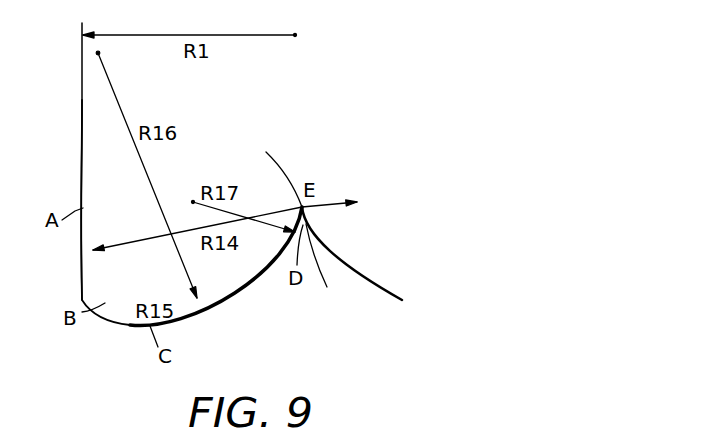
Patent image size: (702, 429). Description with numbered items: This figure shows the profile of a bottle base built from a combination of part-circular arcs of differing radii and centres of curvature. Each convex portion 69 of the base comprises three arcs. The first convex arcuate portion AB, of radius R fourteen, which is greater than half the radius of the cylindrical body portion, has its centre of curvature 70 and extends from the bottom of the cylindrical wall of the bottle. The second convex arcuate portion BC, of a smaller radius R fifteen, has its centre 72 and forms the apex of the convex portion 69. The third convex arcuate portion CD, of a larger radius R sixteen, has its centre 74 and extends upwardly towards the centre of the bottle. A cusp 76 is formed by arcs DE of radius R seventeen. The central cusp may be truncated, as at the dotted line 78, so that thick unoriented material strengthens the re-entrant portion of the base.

The convex portion 69 is at (238, 290).
The centre of curvature 70 is at (341, 193).
The centre 72 is at (120, 320).
The centre 74 is at (146, 174).
The cusp 76 is at (274, 169).
The dotted line 78 is at (328, 267).